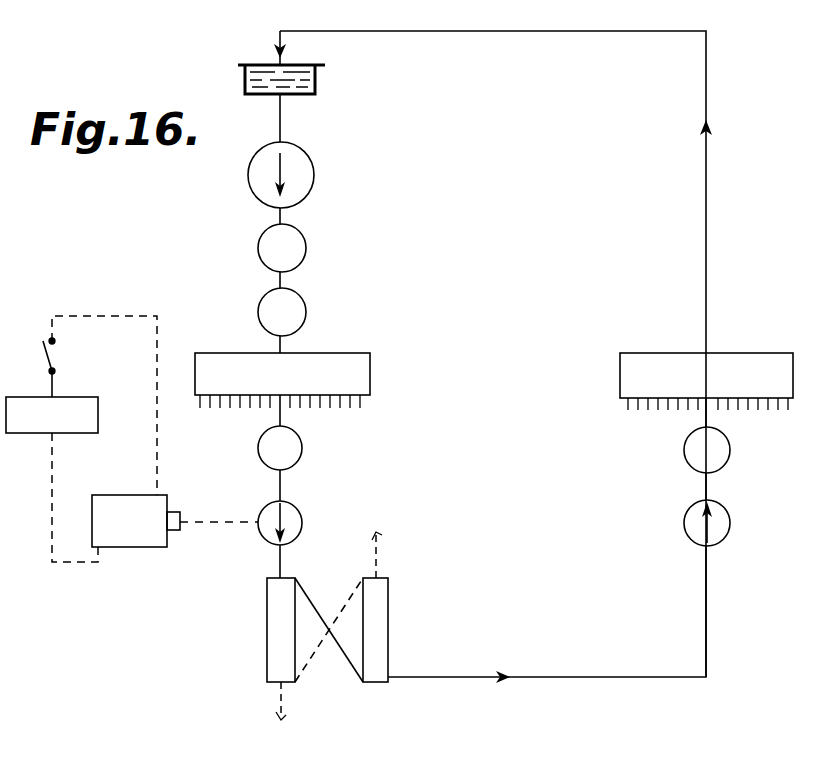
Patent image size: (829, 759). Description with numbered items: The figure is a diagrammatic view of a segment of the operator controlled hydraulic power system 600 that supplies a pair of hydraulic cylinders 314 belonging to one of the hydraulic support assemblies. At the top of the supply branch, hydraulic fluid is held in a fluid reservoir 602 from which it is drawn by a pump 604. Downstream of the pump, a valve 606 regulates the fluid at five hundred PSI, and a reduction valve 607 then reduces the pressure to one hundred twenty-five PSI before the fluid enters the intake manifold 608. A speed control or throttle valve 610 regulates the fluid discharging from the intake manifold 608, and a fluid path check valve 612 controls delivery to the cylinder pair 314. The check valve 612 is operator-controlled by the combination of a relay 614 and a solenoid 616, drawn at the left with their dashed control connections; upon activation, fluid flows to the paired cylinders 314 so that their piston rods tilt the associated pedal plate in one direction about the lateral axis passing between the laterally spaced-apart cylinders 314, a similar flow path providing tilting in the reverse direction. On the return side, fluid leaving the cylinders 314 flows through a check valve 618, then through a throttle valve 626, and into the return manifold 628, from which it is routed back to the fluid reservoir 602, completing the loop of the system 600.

The hydraulic power system 600 is at (190, 219).
The fluid reservoir 602 is at (316, 80).
The pump 604 is at (312, 160).
The valve 606 is at (306, 240).
The reduction valve 607 is at (306, 304).
The intake manifold 608 is at (370, 374).
The throttle valve 610 is at (302, 452).
The check valve 612 is at (302, 520).
The cylinders 314 is at (270, 619).
The relay 614 is at (78, 434).
The solenoid 616 is at (128, 548).
The check valve 618 is at (730, 510).
The throttle valve 626 is at (730, 444).
The return manifold 628 is at (644, 353).